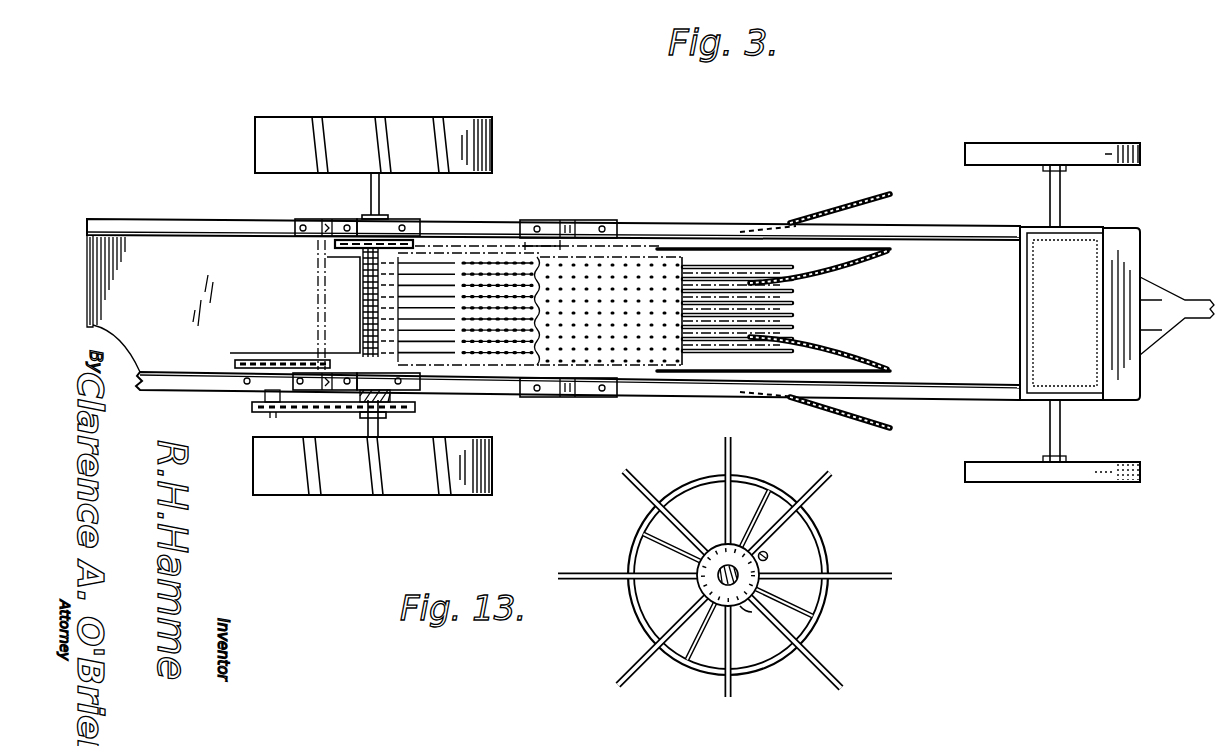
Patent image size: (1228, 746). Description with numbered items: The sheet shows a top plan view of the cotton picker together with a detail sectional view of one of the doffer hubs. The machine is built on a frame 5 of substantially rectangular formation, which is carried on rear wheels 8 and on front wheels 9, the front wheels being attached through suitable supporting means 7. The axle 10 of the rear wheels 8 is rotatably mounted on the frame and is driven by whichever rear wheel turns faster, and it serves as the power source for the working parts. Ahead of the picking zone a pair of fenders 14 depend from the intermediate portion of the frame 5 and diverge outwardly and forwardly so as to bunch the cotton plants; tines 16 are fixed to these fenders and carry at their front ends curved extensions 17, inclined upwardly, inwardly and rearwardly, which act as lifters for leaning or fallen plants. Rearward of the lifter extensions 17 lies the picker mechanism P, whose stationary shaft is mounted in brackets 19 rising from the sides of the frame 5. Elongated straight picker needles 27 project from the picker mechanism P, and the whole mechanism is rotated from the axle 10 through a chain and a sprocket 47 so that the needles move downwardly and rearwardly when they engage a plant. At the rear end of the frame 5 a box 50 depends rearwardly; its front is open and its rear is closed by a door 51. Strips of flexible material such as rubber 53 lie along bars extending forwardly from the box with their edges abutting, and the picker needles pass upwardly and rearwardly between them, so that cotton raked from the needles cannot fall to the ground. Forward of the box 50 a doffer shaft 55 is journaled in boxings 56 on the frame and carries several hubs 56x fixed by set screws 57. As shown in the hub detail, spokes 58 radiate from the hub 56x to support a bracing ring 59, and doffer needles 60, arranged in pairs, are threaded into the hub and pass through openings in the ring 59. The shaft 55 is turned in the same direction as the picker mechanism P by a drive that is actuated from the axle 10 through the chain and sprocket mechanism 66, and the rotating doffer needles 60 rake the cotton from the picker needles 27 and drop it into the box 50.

In FIG. 3, the frame 5 is at (165, 221).
In FIG. 3, the supporting means 7 is at (1052, 420).
In FIG. 3, the rear wheels 8 is at (386, 118).
In FIG. 3, the front wheels 9 is at (1042, 143).
In FIG. 3, the axle 10 is at (377, 186).
In FIG. 3, the fenders 14 is at (879, 195).
In FIG. 3, the tines 16 is at (876, 245).
In FIG. 3, the curved extensions 17 is at (830, 351).
In FIG. 3, the brackets 19 is at (571, 222).
In FIG. 3, the picker needles 27 is at (790, 323).
In FIG. 3, the sprocket 47 is at (400, 242).
In FIG. 3, the box 50 is at (118, 246).
In FIG. 3, the door 51 is at (90, 244).
In FIG. 3, the rubber strips 53 is at (448, 262).
In FIG. 3, the boxings 56 is at (315, 221).
In FIG. 3, the chain and sprocket mechanism 66 is at (258, 406).
In FIG. 3, the picker mechanism P is at (630, 254).
In FIG. 13, the shaft 55 is at (740, 577).
In FIG. 13, the set screws 57 is at (768, 556).
In FIG. 13, the spokes 58 is at (707, 622).
In FIG. 13, the bracing ring 59 is at (818, 521).
In FIG. 13, the doffer needles 60 is at (576, 566).
In FIG. 13, the hubs 56x is at (741, 608).